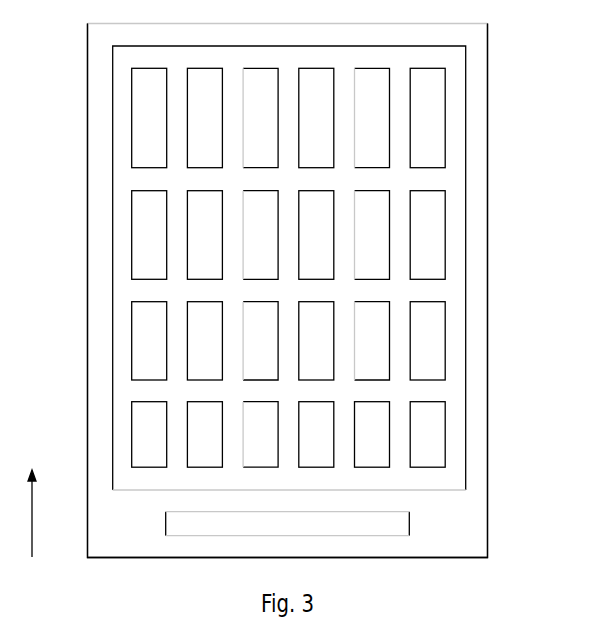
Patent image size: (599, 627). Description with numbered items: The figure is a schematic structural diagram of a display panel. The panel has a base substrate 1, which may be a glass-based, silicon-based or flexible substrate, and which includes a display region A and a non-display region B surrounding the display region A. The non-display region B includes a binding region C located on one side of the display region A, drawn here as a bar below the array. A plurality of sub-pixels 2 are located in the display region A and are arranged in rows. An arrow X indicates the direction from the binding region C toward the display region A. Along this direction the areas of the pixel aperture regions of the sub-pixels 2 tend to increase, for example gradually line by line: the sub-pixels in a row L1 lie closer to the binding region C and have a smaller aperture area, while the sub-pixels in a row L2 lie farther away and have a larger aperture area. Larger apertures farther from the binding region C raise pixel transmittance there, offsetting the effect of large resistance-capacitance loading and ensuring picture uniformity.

The base substrate 1 is at (488, 122).
The sub-pixels 2 is at (444, 340).
The display region A is at (466, 268).
The non-display region B is at (476, 212).
The binding region C is at (410, 522).
The row L1 is at (131, 436).
The row L2 is at (131, 234).
The arrow X is at (33, 499).